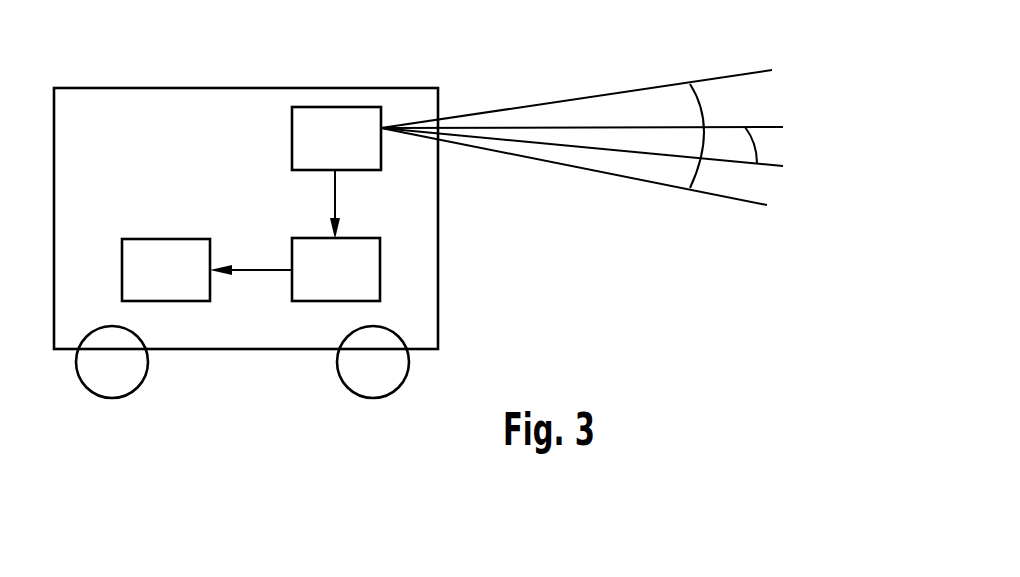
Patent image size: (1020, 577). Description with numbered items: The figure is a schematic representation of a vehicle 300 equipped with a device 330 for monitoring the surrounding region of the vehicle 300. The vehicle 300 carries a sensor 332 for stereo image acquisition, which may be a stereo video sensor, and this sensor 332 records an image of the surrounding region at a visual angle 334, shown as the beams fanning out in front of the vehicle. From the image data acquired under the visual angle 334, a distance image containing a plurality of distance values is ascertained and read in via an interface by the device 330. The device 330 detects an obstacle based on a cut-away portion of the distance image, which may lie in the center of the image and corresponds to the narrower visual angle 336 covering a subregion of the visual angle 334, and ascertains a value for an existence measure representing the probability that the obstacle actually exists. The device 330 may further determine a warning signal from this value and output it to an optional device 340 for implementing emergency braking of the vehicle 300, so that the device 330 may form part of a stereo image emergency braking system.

The vehicle 300 is at (58, 349).
The sensor 332 is at (338, 117).
The visual angle 334 is at (690, 84).
The visual angle 336 is at (757, 163).
The device for monitoring a surrounding region 330 is at (365, 276).
The device for implementing emergency braking 340 is at (190, 287).